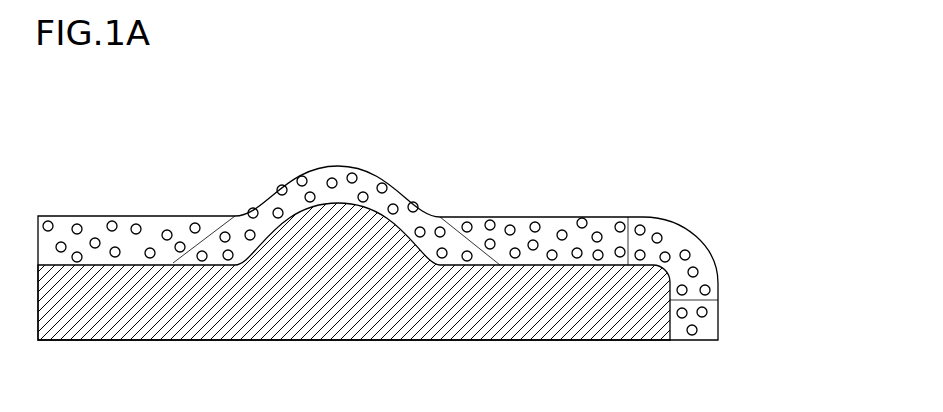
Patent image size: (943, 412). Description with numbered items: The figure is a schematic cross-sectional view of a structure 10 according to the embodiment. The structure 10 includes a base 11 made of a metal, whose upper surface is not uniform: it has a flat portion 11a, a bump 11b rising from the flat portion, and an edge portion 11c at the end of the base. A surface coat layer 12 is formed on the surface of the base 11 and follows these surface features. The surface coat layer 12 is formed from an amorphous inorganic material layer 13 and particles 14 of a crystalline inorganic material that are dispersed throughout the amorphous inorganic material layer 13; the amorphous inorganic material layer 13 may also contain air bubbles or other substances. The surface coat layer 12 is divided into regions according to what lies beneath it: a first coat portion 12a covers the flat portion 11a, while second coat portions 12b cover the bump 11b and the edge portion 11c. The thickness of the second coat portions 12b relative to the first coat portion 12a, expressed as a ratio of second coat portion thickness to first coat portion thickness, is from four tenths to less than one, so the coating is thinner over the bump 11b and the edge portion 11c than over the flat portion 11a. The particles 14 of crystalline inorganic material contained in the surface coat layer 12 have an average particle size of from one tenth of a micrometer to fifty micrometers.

The structure 10 is at (114, 136).
The base 11 is at (321, 318).
The flat portion 11a is at (112, 265).
The bump 11b is at (361, 205).
The edge portion 11c is at (697, 262).
The surface coat layer 12 is at (649, 194).
The first coat portion 12a is at (150, 221).
The second coat portions 12b is at (334, 166).
The amorphous inorganic material layer 13 is at (394, 199).
The particles of crystalline inorganic material 14 is at (300, 175).